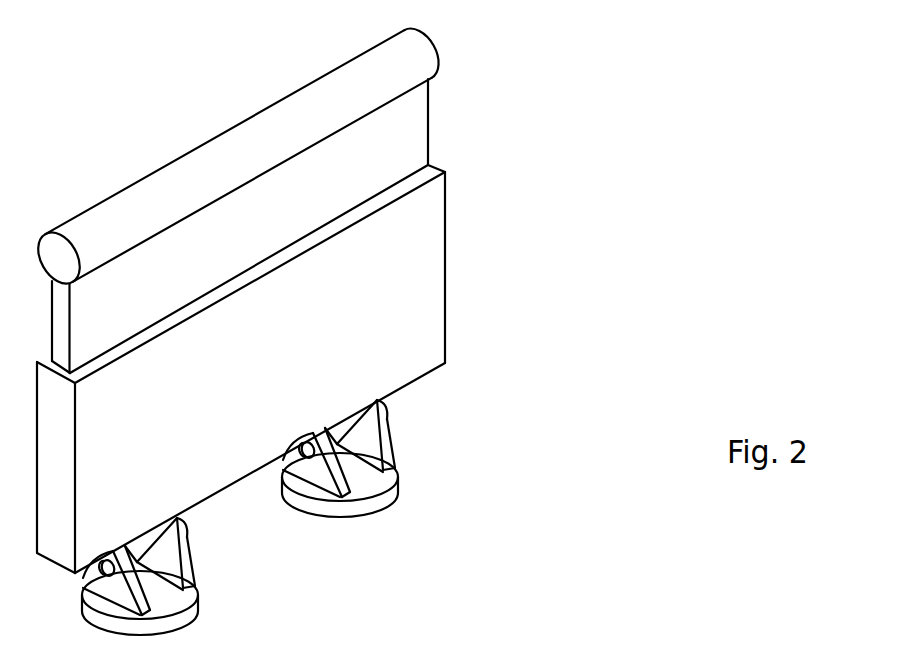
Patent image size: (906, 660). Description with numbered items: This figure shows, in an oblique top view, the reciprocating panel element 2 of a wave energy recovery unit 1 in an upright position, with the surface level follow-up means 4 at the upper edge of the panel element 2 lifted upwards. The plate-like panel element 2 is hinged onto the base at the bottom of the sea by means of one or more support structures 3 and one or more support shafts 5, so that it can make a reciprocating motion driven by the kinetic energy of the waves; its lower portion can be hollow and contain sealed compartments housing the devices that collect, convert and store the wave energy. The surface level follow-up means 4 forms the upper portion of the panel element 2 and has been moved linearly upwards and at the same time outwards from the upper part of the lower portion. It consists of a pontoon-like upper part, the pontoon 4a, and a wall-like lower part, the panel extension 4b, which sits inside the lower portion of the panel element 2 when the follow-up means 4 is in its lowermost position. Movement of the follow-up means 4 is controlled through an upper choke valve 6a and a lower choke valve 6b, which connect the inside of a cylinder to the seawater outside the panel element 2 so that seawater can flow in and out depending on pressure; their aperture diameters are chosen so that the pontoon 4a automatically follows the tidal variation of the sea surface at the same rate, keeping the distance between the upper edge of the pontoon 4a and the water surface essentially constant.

The wave energy recovery unit 1 is at (562, 203).
The panel element 2 is at (437, 347).
The support structure 3 is at (428, 450).
The surface level follow-up means 4 is at (469, 79).
The pontoon 4a is at (122, 200).
The panel extension 4b is at (418, 142).
The support shaft 5 is at (304, 455).
The upper choke valve 6a is at (433, 183).
The lower choke valve 6b is at (433, 269).